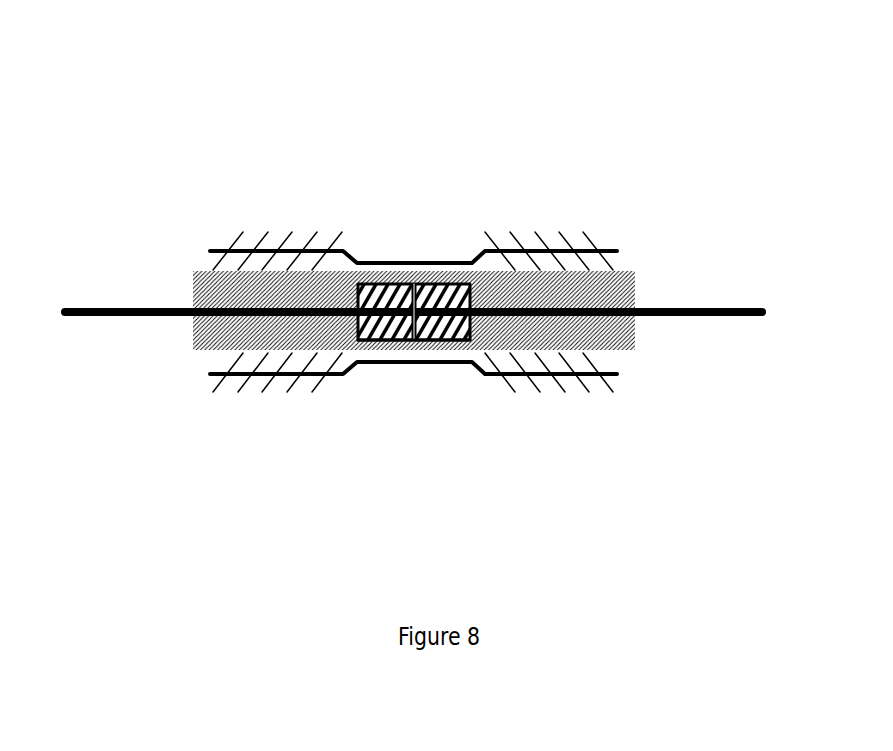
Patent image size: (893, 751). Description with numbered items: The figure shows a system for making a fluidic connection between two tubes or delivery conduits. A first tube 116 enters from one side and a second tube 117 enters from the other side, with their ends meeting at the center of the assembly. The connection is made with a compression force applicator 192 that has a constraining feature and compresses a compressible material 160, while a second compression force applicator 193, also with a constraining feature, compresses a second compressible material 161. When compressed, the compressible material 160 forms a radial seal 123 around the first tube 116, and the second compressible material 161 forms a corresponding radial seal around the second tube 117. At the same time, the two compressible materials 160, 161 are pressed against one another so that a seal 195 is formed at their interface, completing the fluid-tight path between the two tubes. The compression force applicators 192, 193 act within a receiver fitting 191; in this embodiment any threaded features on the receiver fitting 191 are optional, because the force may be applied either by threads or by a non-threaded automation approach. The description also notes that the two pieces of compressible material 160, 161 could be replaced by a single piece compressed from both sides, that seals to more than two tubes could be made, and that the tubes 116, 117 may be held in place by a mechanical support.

The first tube 116 is at (122, 307).
The second tube 117 is at (678, 305).
The radial seal 123 is at (393, 303).
The seal 195 is at (414, 287).
The receiver fitting 191 is at (373, 258).
The compression force applicator 192 is at (210, 330).
The second compression force applicator 193 is at (615, 338).
The compressible material 160 is at (392, 336).
The second compressible material 161 is at (447, 335).